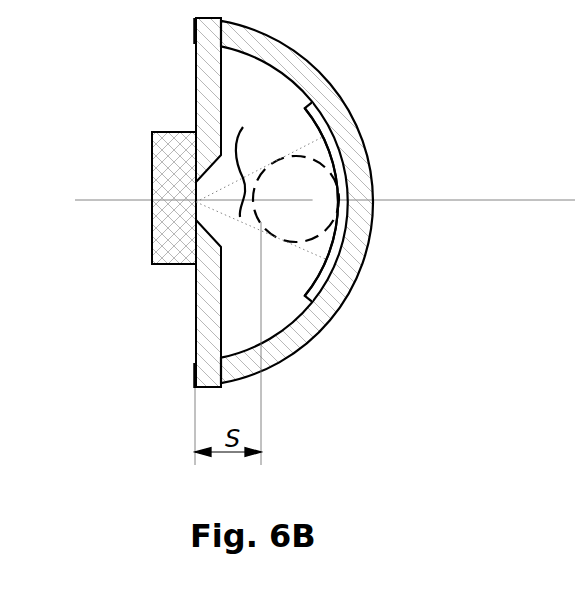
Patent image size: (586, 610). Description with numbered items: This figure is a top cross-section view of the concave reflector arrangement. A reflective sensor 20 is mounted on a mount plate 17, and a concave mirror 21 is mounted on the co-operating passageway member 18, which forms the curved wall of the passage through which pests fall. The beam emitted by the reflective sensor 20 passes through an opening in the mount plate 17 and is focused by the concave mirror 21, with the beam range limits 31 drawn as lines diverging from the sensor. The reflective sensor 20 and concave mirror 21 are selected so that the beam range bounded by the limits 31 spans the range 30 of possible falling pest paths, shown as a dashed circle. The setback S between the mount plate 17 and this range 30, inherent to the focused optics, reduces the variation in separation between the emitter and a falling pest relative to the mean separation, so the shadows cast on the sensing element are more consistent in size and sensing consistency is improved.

The mount plate 17 is at (196, 76).
The passageway member 18 is at (343, 300).
The reflective sensor 20 is at (160, 167).
The concave mirror 21 is at (318, 110).
The range of possible falling pest paths 30 is at (328, 152).
The beam range limits 31 is at (303, 151).